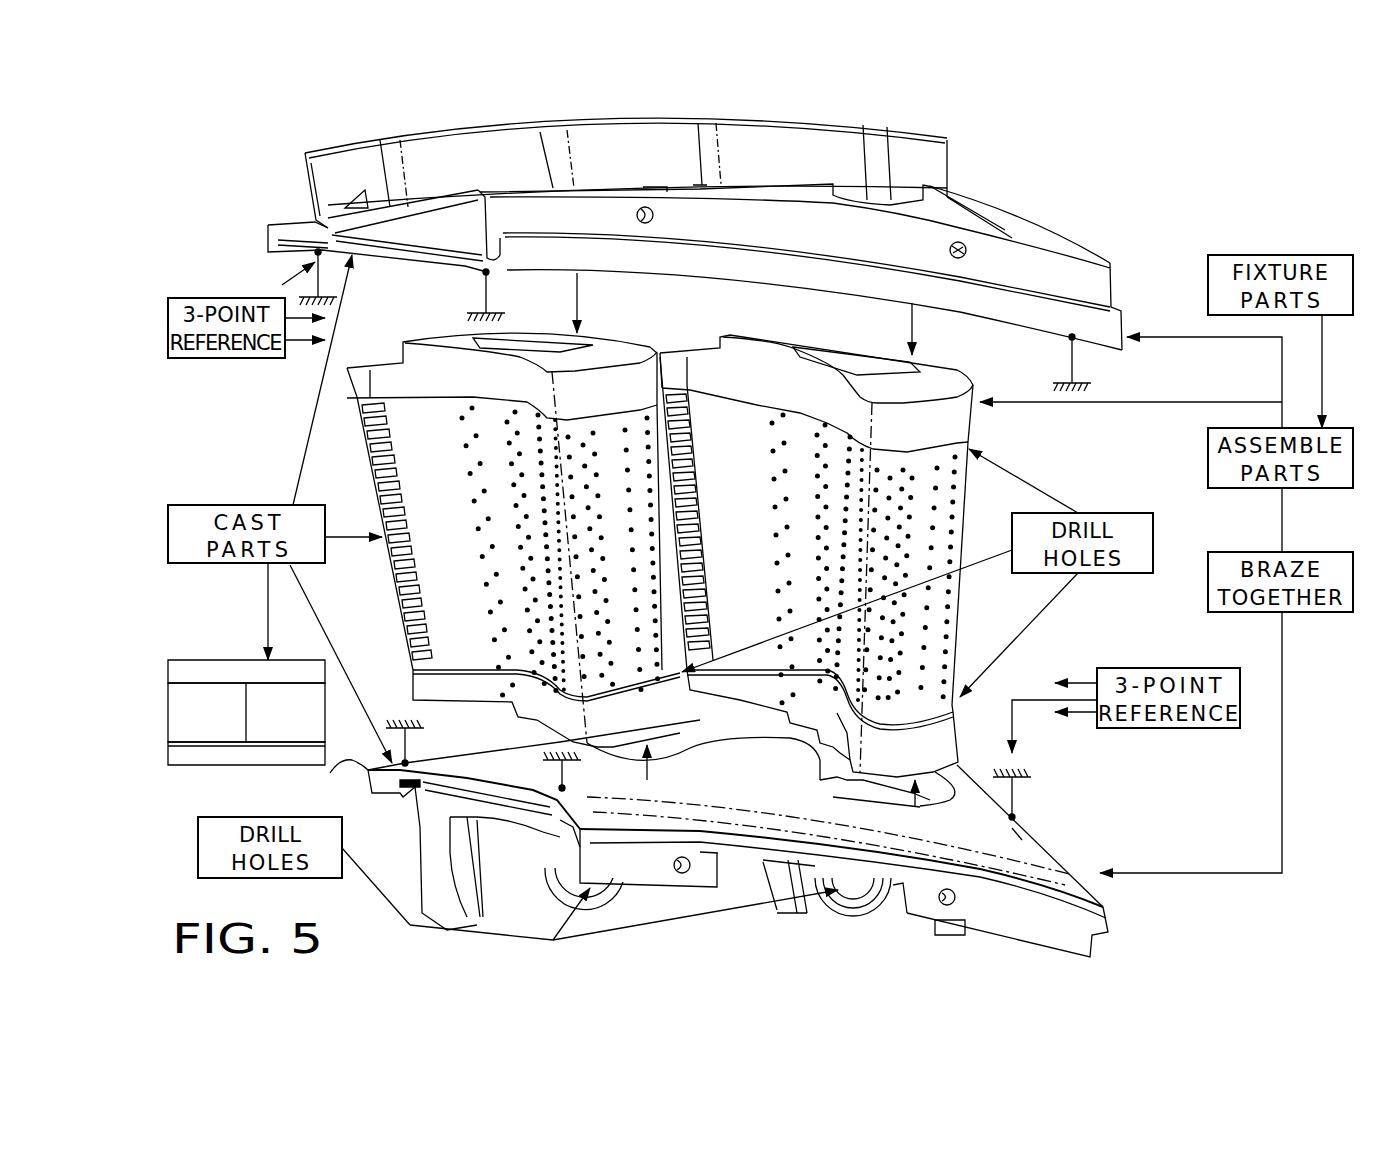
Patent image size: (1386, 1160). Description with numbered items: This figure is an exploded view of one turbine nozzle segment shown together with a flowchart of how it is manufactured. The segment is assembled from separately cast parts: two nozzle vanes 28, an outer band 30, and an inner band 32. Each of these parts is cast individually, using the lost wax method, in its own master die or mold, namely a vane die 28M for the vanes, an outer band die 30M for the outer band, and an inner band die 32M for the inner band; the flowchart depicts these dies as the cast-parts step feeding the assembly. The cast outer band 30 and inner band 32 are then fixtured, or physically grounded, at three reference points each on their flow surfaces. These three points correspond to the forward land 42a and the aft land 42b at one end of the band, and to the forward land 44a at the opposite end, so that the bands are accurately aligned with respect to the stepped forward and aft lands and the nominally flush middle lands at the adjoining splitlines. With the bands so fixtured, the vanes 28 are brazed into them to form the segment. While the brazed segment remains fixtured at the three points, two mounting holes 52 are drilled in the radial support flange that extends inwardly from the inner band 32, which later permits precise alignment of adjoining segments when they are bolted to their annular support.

The outer band 30 is at (1007, 232).
The nozzle vane 28 is at (460, 508).
The inner band 32 is at (1070, 847).
The mounting hole 52 is at (553, 893).
The forward land 42a is at (637, 802).
The aft land 42b is at (360, 762).
The forward land 44a is at (1017, 833).
The outer band die 30M is at (248, 672).
The vane die 28M is at (229, 728).
The inner band die 32M is at (258, 758).